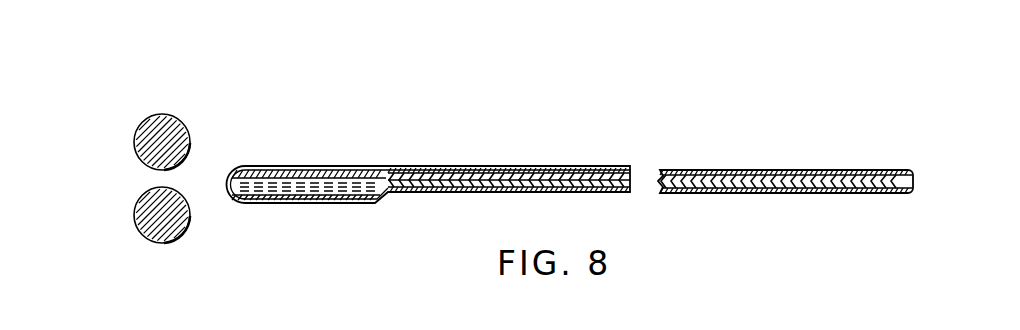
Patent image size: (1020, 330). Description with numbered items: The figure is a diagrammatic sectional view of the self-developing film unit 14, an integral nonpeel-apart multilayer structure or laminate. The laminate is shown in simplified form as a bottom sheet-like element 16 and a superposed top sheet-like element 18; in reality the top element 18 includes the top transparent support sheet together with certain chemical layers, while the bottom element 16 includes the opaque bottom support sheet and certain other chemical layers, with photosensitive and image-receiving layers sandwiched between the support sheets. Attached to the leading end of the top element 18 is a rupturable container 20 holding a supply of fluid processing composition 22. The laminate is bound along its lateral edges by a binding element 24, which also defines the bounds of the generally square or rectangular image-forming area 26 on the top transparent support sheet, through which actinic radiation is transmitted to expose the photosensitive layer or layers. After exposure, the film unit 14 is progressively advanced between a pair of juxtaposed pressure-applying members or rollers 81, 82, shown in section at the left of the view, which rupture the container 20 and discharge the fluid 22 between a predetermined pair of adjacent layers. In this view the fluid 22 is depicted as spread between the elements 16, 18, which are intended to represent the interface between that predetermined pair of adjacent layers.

The self-developing film unit 14 is at (429, 159).
The bottom sheet-like element 16 is at (566, 186).
The top sheet-like element 18 is at (557, 176).
The rupturable container 20 is at (357, 204).
The fluid processing composition 22 is at (312, 187).
The binding element 24 is at (399, 167).
The image-forming area 26 is at (713, 172).
The pressure-applying roller 81 is at (188, 137).
The pressure-applying roller 82 is at (188, 219).